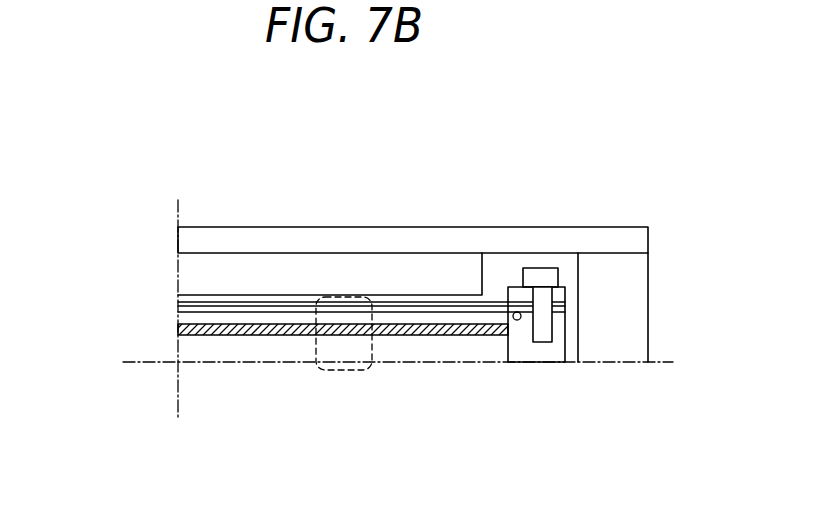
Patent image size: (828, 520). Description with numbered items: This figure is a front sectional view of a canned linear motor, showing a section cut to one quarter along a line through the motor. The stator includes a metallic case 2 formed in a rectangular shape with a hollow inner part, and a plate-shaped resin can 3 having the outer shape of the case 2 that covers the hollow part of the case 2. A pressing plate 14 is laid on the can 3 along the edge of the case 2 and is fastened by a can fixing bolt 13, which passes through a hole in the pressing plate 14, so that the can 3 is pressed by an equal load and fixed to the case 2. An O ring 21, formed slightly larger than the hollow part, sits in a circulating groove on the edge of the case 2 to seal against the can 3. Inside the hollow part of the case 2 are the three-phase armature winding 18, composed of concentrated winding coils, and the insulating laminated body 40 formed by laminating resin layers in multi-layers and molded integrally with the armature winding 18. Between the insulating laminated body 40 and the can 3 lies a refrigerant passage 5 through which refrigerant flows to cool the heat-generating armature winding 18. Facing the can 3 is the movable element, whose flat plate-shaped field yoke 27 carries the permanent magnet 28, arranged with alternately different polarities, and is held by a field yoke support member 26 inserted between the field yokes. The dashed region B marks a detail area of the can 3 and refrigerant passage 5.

The case 2 is at (535, 348).
The can 3 is at (185, 305).
The refrigerant passage 5 is at (183, 317).
The can fixing bolt 13 is at (542, 282).
The pressing plate 14 is at (515, 285).
The armature winding 18 is at (232, 348).
The O ring 21 is at (519, 320).
The field yoke support member 26 is at (625, 305).
The field yoke 27 is at (625, 238).
The permanent magnet 28 is at (188, 276).
The insulating laminated body 40 is at (179, 337).
The detail region B is at (340, 295).